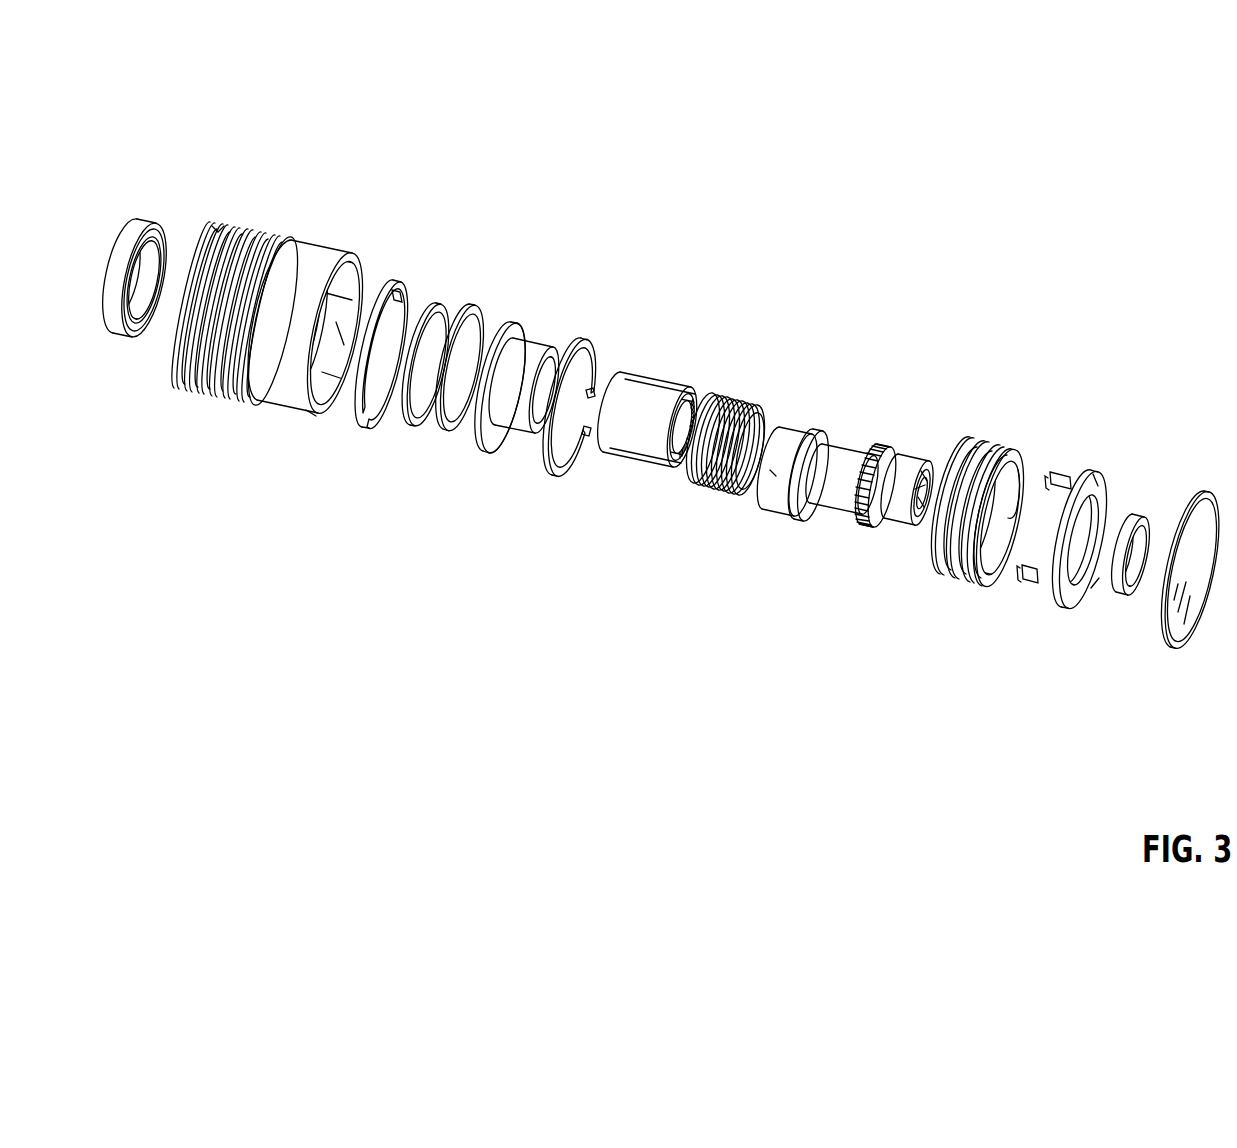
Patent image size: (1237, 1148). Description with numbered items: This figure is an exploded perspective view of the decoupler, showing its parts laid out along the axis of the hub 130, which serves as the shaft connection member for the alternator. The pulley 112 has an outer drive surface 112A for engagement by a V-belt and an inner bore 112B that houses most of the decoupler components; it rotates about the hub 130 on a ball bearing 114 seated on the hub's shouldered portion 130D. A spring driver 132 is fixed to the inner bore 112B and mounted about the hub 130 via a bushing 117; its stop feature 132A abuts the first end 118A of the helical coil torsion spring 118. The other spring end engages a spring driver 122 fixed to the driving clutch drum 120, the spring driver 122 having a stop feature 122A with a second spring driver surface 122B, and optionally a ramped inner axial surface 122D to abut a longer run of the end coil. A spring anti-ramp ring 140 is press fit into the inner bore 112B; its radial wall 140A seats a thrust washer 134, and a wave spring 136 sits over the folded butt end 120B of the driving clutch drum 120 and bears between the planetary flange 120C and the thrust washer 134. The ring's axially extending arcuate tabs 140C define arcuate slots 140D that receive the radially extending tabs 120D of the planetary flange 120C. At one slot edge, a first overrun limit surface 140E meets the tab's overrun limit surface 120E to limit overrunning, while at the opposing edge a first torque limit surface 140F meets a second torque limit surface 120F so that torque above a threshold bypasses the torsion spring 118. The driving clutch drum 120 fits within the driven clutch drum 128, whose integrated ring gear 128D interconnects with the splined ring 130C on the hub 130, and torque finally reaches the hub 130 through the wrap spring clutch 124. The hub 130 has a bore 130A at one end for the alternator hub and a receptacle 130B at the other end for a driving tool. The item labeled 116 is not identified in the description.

The pulley 112 is at (285, 268).
The outer drive surface 112A is at (218, 230).
The inner bore 112B is at (311, 416).
The ball bearing 114 is at (146, 224).
The end cap 116 is at (1172, 614).
The bushing 117 is at (1124, 580).
The helical coil torsion spring 118 is at (946, 536).
The first end of the torsion spring 118A is at (1018, 478).
The driving clutch drum 120 is at (540, 348).
The folded butt end 120B is at (490, 450).
The planetary flange 120C is at (468, 445).
The radially extending tabs 120D is at (508, 326).
The overrun limit surface 120E is at (514, 440).
The second torque limit surface 120F is at (512, 340).
The spring driver 122 is at (592, 378).
The stop feature 122A is at (568, 474).
The second spring driver surface 122B is at (582, 342).
The inclined or ramped inner axial surface 122D is at (555, 470).
The wrap spring clutch 124 is at (727, 405).
The driven clutch drum 128 is at (658, 380).
The integrated ring gear 128D is at (678, 460).
The hub 130 is at (842, 492).
The bore 130A is at (772, 476).
The receptacle 130B is at (908, 468).
The splined ring 130C is at (889, 450).
The shouldered portion 130D is at (800, 434).
The spring driver 132 is at (1050, 580).
The stop feature 132A is at (1100, 482).
The thrust washer 134 is at (468, 310).
The wave spring 136 is at (440, 428).
The spring anti-ramp ring 140 is at (398, 288).
The radial wall 140A is at (378, 428).
The axially extending arcuate tabs 140C is at (412, 300).
The arcuate slots 140D is at (363, 414).
The first overrun limit surface 140E is at (368, 424).
The first torque limit surface 140F is at (398, 292).